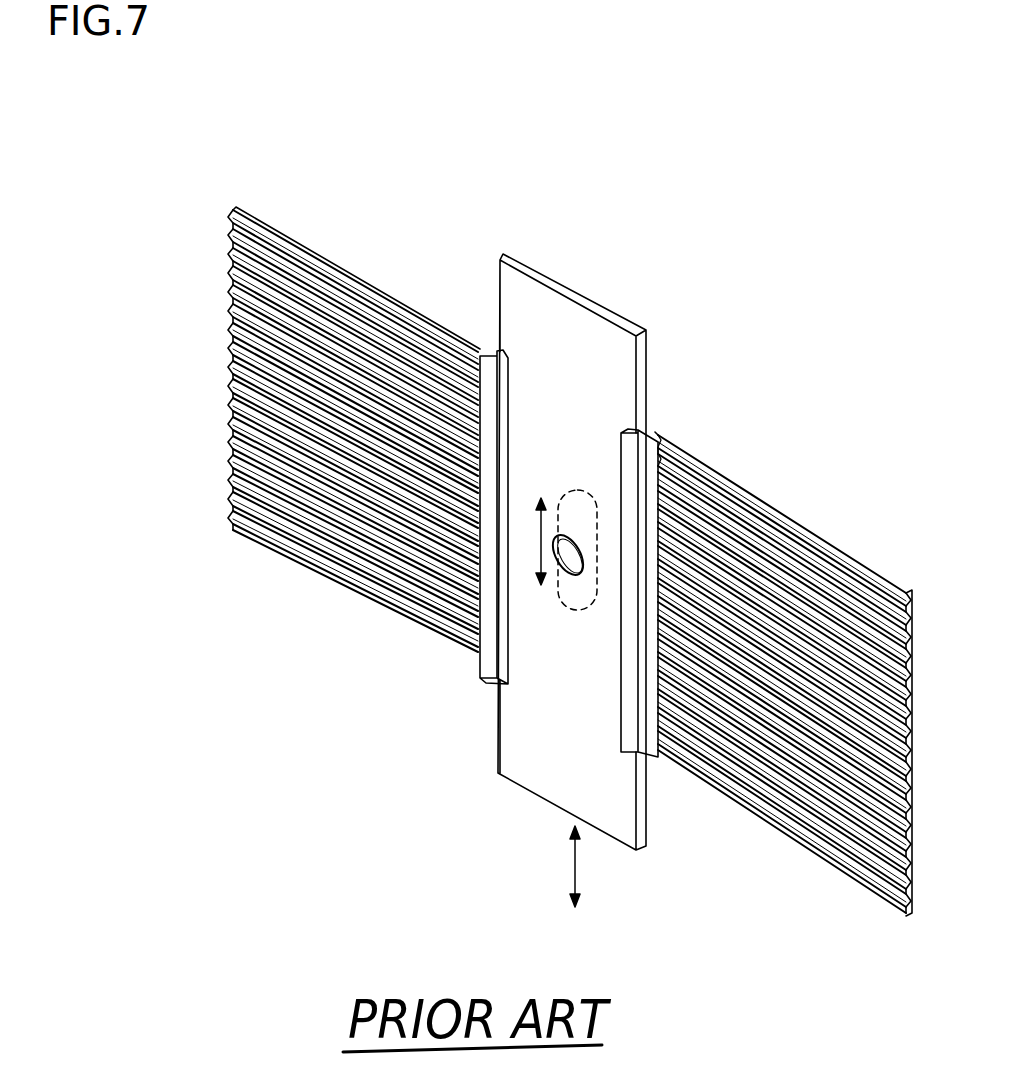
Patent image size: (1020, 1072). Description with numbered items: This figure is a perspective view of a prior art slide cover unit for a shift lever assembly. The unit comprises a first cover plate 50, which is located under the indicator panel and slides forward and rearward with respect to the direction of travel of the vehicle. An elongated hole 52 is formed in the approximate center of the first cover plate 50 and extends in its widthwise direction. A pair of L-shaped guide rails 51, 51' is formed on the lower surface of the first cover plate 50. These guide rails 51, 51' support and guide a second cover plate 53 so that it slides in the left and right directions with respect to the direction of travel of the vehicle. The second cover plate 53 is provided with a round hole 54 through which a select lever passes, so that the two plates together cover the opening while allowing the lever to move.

The first cover plate 50 is at (250, 453).
The guide rail 51 is at (474, 462).
The guide rail 51' is at (679, 567).
The elongated hole 52 is at (570, 490).
The second cover plate 53 is at (513, 755).
The round hole 54 is at (558, 563).